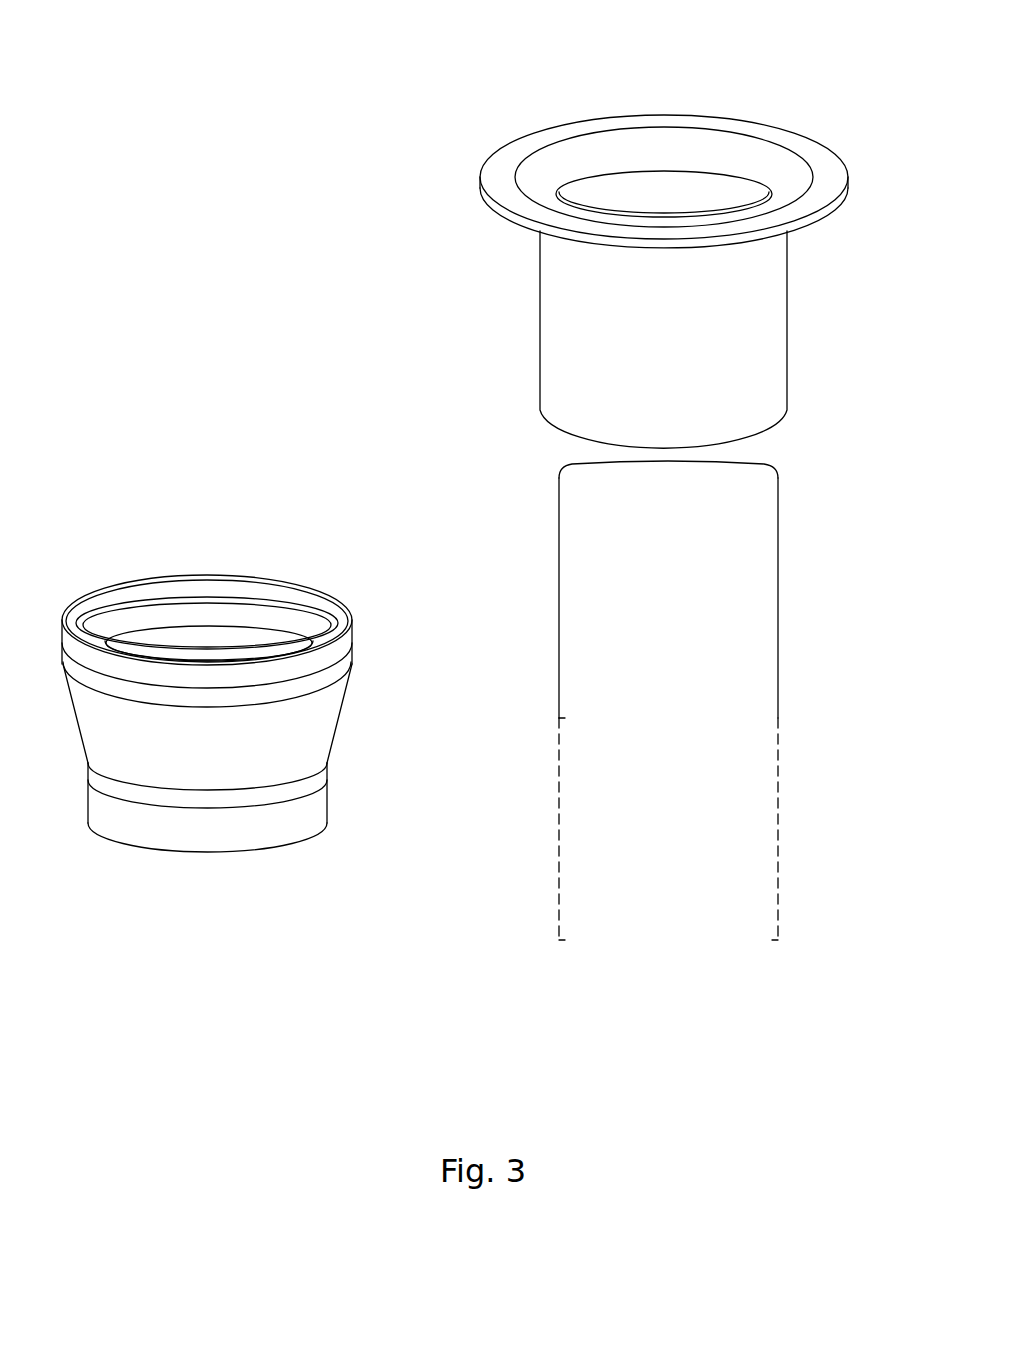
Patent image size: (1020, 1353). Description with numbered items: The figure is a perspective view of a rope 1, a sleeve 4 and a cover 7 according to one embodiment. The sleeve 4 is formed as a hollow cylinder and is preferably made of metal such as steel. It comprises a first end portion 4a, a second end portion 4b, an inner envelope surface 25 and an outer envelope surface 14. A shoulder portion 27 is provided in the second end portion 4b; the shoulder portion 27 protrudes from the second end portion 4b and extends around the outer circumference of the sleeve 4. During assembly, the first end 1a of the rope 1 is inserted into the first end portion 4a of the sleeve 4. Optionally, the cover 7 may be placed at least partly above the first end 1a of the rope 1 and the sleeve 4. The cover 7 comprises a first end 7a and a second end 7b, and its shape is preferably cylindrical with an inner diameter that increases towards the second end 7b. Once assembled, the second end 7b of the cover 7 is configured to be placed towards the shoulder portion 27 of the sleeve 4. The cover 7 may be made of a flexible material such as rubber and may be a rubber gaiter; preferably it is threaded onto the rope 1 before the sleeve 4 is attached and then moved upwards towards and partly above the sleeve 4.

The rope 1 is at (527, 637).
The first end of the rope 1a is at (560, 474).
The sleeve 4 is at (602, 240).
The first end portion 4a is at (542, 418).
The second end portion 4b is at (810, 222).
The cover 7 is at (207, 730).
The first end of the cover 7a is at (225, 853).
The second end of the cover 7b is at (165, 573).
The outer envelope surface 14 is at (600, 178).
The inner envelope surface 25 is at (643, 148).
The shoulder portion 27 is at (482, 178).